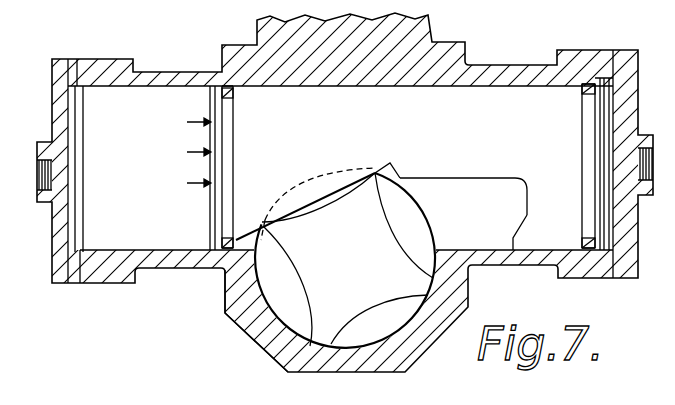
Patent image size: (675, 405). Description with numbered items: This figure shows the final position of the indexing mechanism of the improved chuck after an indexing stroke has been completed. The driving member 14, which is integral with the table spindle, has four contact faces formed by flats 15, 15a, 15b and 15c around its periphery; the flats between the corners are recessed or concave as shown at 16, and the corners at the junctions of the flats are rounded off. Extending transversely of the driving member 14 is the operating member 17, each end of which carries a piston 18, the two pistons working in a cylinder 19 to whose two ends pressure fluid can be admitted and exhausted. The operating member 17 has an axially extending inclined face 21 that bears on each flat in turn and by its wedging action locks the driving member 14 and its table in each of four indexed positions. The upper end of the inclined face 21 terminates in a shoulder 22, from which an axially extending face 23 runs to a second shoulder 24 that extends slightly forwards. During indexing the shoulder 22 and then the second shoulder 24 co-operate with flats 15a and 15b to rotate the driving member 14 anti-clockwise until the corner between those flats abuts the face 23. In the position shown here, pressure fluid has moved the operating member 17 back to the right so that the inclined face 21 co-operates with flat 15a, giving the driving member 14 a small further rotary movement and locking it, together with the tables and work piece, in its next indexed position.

The driving member 14 is at (345, 260).
The flat 15 is at (262, 332).
The flat 15a is at (271, 216).
The flat 15b is at (392, 165).
The flat 15c is at (421, 311).
The recessed concave portion 16 is at (306, 307).
The operating member 17 is at (526, 132).
The piston 18 is at (209, 112).
The cylinder 19 is at (175, 82).
The inclined face 21 is at (323, 201).
The shoulder 22 is at (392, 164).
The axially extending face 23 is at (463, 178).
The second shoulder 24 is at (517, 208).